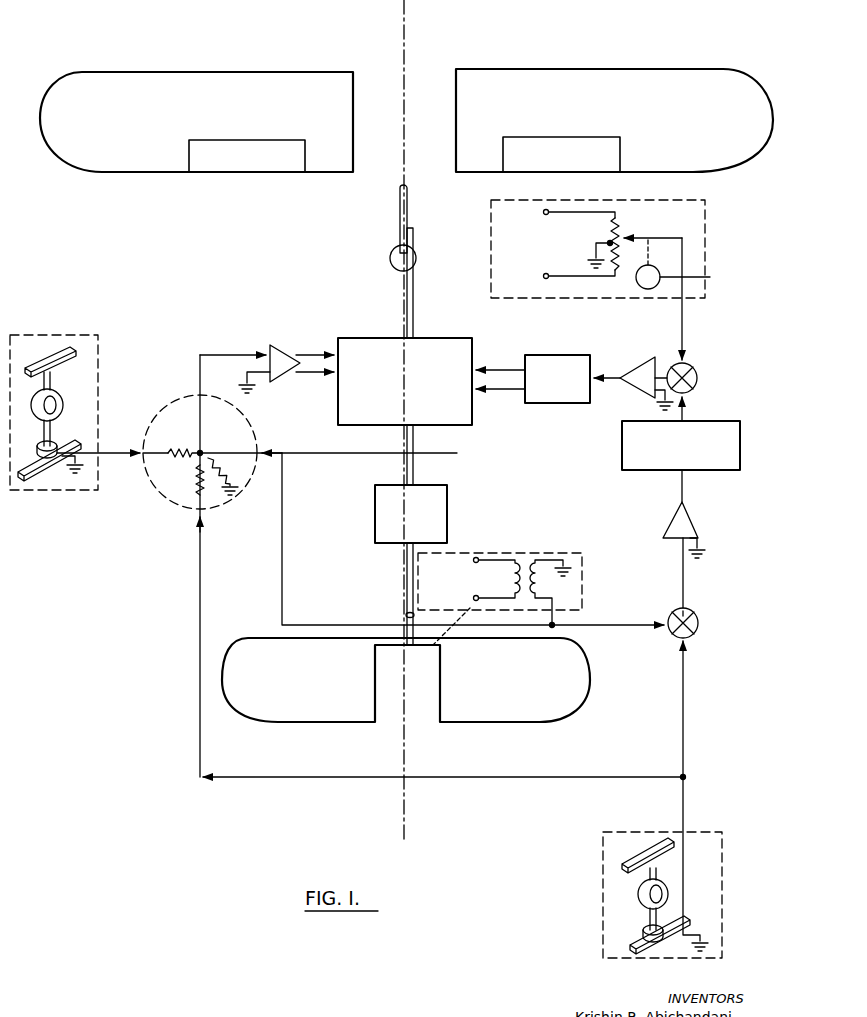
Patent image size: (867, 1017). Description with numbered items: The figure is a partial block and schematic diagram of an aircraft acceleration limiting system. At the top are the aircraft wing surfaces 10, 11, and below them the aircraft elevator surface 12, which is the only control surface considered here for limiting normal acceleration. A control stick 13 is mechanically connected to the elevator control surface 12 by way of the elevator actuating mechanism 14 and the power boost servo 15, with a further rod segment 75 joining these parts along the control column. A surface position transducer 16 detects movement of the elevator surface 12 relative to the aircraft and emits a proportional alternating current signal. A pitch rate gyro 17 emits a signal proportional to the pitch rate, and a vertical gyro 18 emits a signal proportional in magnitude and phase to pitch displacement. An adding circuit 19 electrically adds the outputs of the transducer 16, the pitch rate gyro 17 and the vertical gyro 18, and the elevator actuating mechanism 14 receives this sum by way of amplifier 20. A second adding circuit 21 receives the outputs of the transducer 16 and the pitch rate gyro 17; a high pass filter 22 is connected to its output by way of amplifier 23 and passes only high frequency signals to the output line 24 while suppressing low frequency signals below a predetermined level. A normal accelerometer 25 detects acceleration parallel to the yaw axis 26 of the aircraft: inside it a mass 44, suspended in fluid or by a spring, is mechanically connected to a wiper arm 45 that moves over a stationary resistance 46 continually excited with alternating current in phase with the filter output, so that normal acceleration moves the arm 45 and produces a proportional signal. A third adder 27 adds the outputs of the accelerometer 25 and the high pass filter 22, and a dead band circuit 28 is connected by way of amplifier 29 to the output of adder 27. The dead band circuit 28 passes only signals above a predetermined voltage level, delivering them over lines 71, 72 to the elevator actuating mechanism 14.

The aircraft wing surface 10 is at (583, 70).
The aircraft wing surface 11 is at (238, 73).
The elevator control surface 12 is at (488, 722).
The control stick 13 is at (409, 216).
The elevator actuating mechanism 14 is at (423, 344).
The power boost servo 15 is at (447, 522).
The surface position transducer 16 is at (582, 583).
The pitch rate gyro 17 is at (603, 848).
The vertical gyro 18 is at (52, 338).
The adding circuit 19 is at (163, 408).
The amplifier 20 is at (283, 343).
The second adding circuit 21 is at (700, 623).
The high pass filter 22 is at (712, 472).
The amplifier 23 is at (712, 535).
The output line 24 is at (688, 416).
The normal accelerometer 25 is at (624, 271).
The yaw axis 26 is at (406, 42).
The third adder 27 is at (700, 377).
The dead band circuit 28 is at (552, 355).
The amplifier 29 is at (632, 360).
The mass 44 is at (710, 278).
The wiper arm 45 is at (656, 238).
The resistance 46 is at (626, 223).
The line 71 is at (495, 368).
The line 72 is at (500, 393).
The control rod segment 75 is at (415, 471).